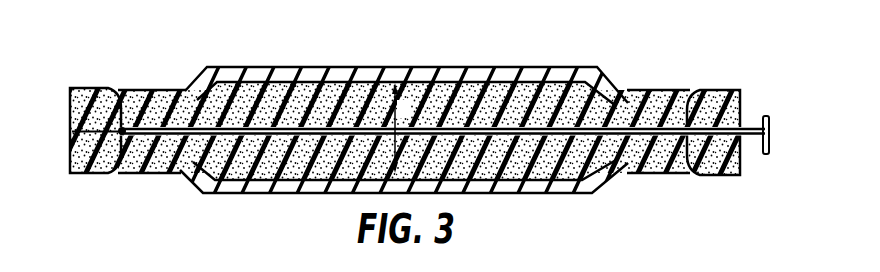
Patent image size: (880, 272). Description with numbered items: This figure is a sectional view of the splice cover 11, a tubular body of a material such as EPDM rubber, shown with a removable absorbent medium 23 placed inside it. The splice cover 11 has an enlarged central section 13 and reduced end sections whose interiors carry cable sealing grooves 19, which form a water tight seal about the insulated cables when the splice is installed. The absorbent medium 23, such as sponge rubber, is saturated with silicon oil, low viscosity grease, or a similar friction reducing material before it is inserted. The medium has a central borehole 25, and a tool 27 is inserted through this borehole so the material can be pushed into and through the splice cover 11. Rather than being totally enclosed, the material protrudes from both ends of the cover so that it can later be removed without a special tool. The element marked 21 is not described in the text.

The splice cover 11 is at (415, 111).
The enlarged central section 13 is at (503, 68).
The cable sealing grooves 19 is at (661, 88).
The left end cap 21 is at (157, 91).
The absorbent medium 23 is at (712, 88).
The central borehole 25 is at (283, 108).
The tool 27 is at (769, 131).